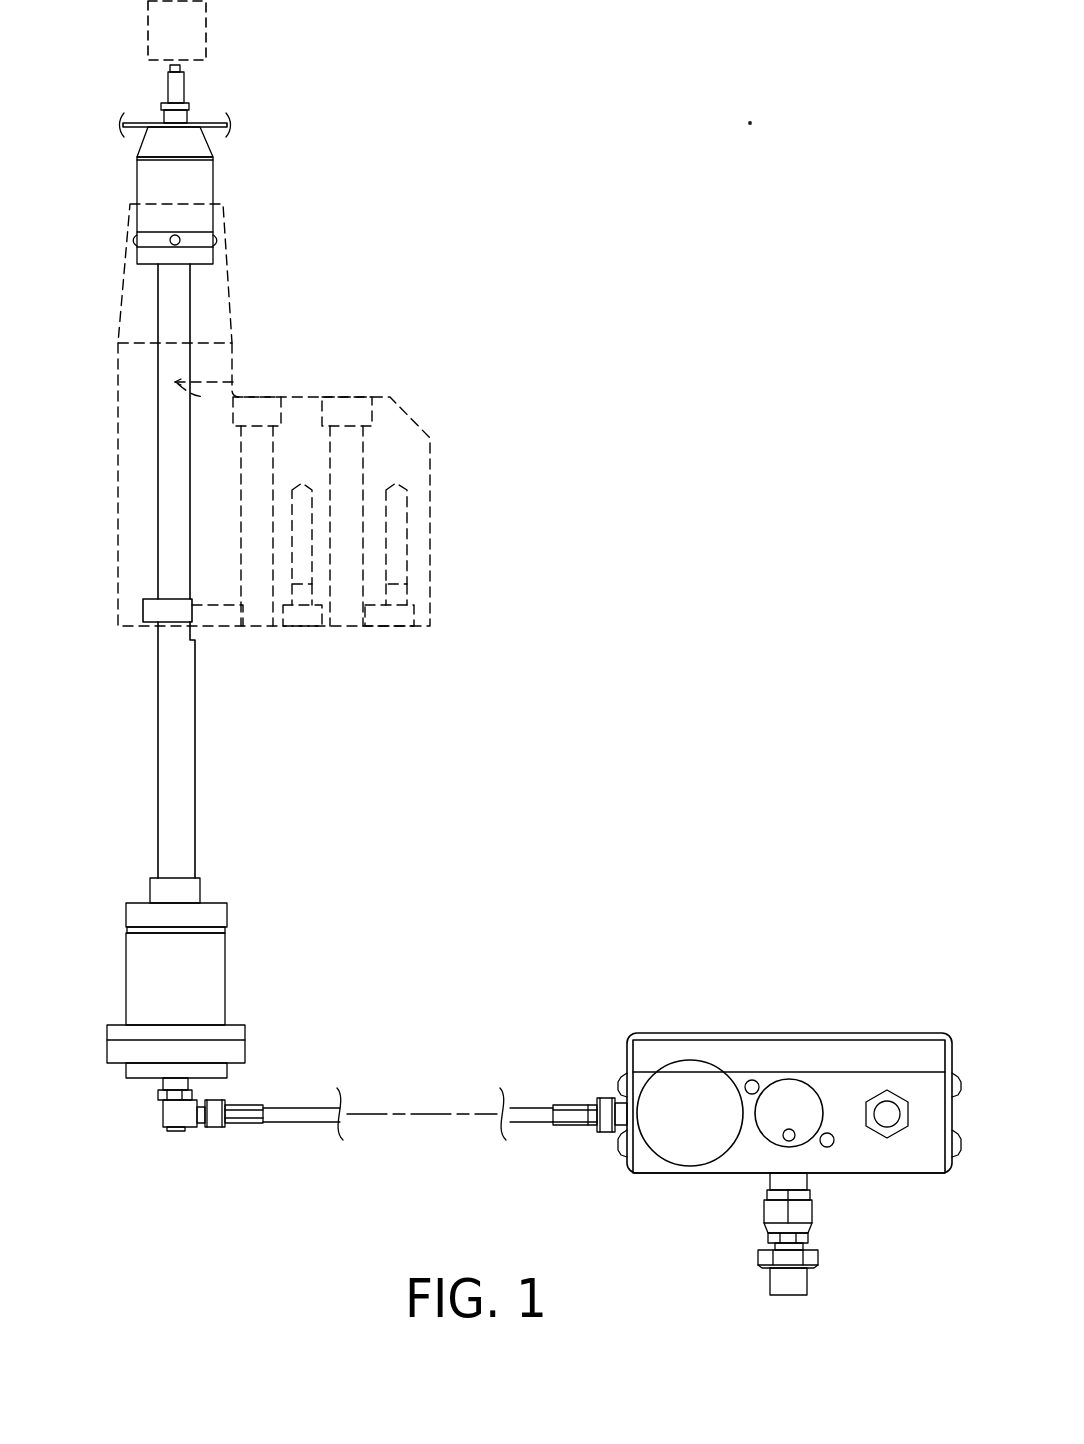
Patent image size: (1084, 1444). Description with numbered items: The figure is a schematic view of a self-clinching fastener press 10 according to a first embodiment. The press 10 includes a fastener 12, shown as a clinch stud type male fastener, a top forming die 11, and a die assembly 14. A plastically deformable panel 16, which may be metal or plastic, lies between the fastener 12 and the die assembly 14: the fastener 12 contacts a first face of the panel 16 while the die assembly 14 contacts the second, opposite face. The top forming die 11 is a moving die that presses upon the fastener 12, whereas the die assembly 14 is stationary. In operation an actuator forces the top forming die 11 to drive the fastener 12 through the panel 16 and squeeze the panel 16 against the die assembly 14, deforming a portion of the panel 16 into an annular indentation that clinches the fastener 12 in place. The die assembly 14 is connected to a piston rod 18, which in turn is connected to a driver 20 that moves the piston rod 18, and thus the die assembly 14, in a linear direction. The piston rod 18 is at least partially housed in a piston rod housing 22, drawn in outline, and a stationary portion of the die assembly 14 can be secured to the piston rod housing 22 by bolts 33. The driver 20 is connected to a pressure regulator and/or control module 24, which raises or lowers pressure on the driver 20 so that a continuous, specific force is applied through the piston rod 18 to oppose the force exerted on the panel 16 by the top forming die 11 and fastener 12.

The press 10 is at (750, 123).
The top forming die 11 is at (147, 25).
The fastener 12 is at (192, 77).
The die assembly 14 is at (215, 176).
The plastically deformable panel 16 is at (137, 122).
The piston rod 18 is at (158, 361).
The driver 20 is at (195, 732).
The piston rod housing 22 is at (117, 483).
The pressure regulator and/or control module 24 is at (822, 987).
The bolts 33 is at (174, 234).